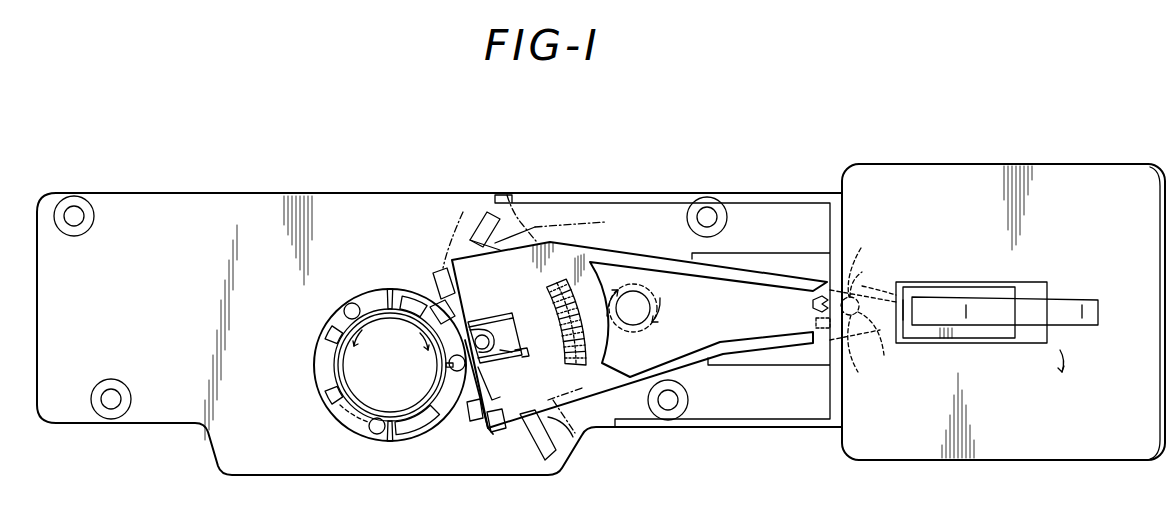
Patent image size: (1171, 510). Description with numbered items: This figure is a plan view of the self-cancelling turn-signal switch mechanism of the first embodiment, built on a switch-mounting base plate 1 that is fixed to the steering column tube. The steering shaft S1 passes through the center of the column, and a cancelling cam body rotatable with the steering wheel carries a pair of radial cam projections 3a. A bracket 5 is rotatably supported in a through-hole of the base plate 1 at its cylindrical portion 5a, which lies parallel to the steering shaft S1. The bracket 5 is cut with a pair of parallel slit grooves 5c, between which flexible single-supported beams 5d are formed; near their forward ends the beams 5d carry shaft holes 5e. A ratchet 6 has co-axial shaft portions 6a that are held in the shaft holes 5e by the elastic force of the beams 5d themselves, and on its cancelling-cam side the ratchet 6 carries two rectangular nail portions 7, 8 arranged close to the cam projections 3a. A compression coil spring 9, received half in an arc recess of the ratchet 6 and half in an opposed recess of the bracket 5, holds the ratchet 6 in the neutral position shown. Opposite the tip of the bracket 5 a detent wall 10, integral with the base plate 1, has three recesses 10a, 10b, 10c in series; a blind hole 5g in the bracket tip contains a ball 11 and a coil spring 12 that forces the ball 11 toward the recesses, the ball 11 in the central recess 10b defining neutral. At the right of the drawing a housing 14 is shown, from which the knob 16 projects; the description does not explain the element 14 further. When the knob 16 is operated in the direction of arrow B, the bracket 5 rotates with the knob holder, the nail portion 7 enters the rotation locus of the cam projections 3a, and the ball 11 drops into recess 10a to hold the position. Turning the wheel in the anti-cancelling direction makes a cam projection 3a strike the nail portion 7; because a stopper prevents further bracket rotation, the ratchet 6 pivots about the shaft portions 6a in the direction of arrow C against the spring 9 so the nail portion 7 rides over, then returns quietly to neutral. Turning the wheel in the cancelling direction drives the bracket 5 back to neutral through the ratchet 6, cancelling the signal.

The switch-mounting base plate 1 is at (316, 192).
The cam projections 3a is at (420, 300).
The steering shaft S1 is at (404, 398).
The bracket 5 is at (630, 428).
The cylindrical portion of the bracket 5a is at (656, 306).
The slit grooves 5c is at (510, 313).
The single-supported beams 5d is at (510, 362).
The shaft holes 5e is at (497, 345).
The blind hole 5g is at (812, 303).
The ratchet 6 is at (486, 438).
The shaft portions 6a is at (492, 383).
The nail portion 7 is at (445, 275).
The nail portion 8 is at (472, 424).
The compression coil spring 9 is at (568, 322).
The detent wall 10 is at (863, 321).
The recess 10a is at (867, 239).
The central recess 10b is at (840, 285).
The recess 10c is at (845, 344).
The ball 11 is at (881, 363).
The coil spring 12 is at (815, 323).
The switch housing 14 is at (1074, 176).
The knob 16 is at (1072, 300).
The arrow mark C is at (476, 324).
The arrow mark B is at (1073, 365).